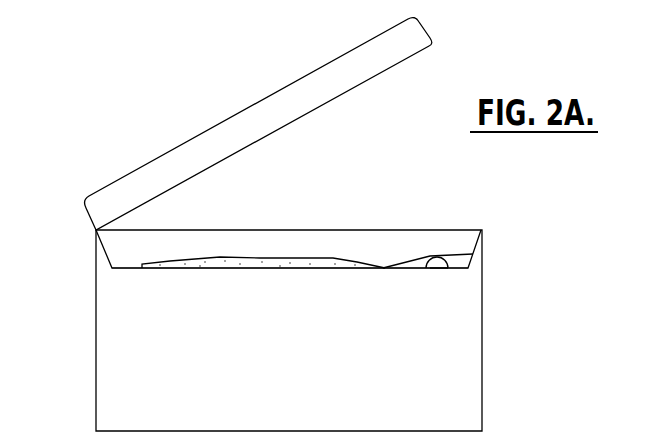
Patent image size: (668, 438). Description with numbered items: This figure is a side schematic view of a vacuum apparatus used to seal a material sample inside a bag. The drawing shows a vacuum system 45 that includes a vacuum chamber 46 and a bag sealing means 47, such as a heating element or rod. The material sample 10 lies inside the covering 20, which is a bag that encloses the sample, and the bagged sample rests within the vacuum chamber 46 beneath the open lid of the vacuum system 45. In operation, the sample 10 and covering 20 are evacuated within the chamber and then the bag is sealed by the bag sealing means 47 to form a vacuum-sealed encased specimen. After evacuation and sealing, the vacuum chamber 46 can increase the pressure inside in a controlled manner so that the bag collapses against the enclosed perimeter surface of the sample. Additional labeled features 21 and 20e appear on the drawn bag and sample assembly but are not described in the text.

The vacuum system 45 is at (253, 78).
The material sample 10 is at (289, 330).
The vacuum chamber 46 is at (203, 245).
The covering 20 is at (263, 229).
The wedge portion of layer 21 is at (428, 308).
The edge portion of layer 20e is at (463, 228).
The bag sealing means 47 is at (486, 295).